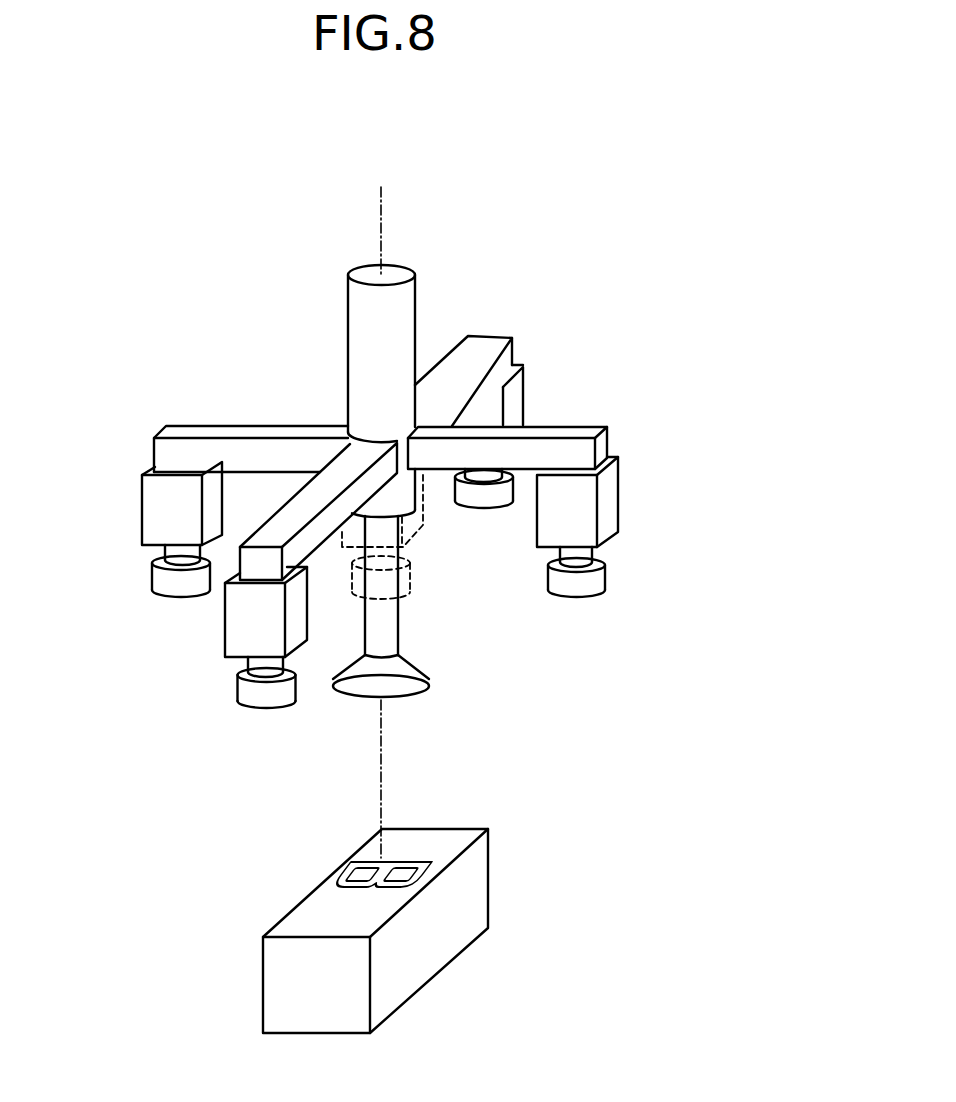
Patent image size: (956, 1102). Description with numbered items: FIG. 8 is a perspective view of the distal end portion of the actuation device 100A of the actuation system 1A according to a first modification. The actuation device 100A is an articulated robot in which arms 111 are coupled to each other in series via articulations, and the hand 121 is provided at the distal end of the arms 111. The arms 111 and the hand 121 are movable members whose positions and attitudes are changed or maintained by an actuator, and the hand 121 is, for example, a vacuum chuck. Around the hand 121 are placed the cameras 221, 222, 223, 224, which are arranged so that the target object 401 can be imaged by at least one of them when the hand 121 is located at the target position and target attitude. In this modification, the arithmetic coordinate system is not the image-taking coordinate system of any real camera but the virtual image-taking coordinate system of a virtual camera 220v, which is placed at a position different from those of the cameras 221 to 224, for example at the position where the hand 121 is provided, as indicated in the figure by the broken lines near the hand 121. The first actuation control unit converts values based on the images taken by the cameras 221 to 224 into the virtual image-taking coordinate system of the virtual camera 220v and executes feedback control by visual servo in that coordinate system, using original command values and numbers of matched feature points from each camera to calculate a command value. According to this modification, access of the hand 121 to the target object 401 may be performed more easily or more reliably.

The actuation system 1A is at (484, 204).
The actuation device 100A is at (363, 266).
The arm 111 is at (405, 312).
The hand 121 is at (428, 673).
The virtual camera 220v is at (410, 584).
The camera 221 is at (160, 520).
The camera 222 is at (582, 520).
The camera 223 is at (492, 415).
The camera 224 is at (240, 635).
The target object 401 is at (470, 888).